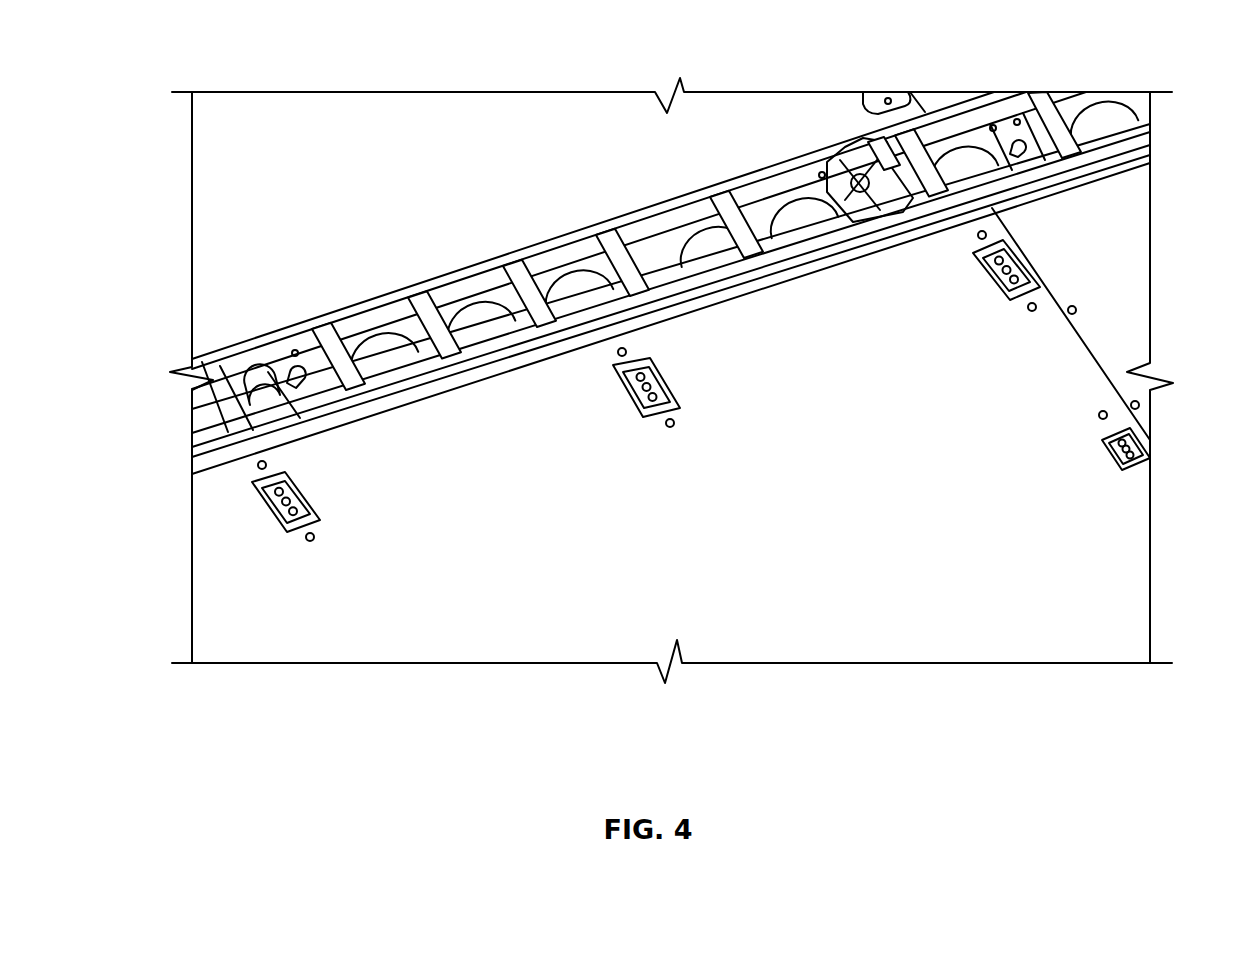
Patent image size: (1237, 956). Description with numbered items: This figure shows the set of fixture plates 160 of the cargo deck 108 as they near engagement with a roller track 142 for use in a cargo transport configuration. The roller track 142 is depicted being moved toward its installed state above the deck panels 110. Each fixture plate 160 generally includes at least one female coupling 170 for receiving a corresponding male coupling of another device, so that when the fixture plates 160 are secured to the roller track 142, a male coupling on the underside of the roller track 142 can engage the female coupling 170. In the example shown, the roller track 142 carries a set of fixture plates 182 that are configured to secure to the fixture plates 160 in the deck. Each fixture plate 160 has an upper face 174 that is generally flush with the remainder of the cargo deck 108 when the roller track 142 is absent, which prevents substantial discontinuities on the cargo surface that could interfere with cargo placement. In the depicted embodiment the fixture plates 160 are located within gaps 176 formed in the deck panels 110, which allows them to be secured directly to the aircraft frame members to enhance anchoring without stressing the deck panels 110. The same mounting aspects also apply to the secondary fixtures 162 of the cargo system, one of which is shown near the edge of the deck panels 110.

The cargo deck 108 is at (407, 118).
The deck panels 110 is at (488, 634).
The roller track 142 is at (786, 157).
The fixture plates 160 is at (660, 377).
The secondary fixtures 162 is at (1150, 444).
The female coupling 170 is at (680, 400).
The upper face 174 is at (616, 370).
The gaps 176 is at (648, 418).
The fixture plates 182 is at (285, 368).